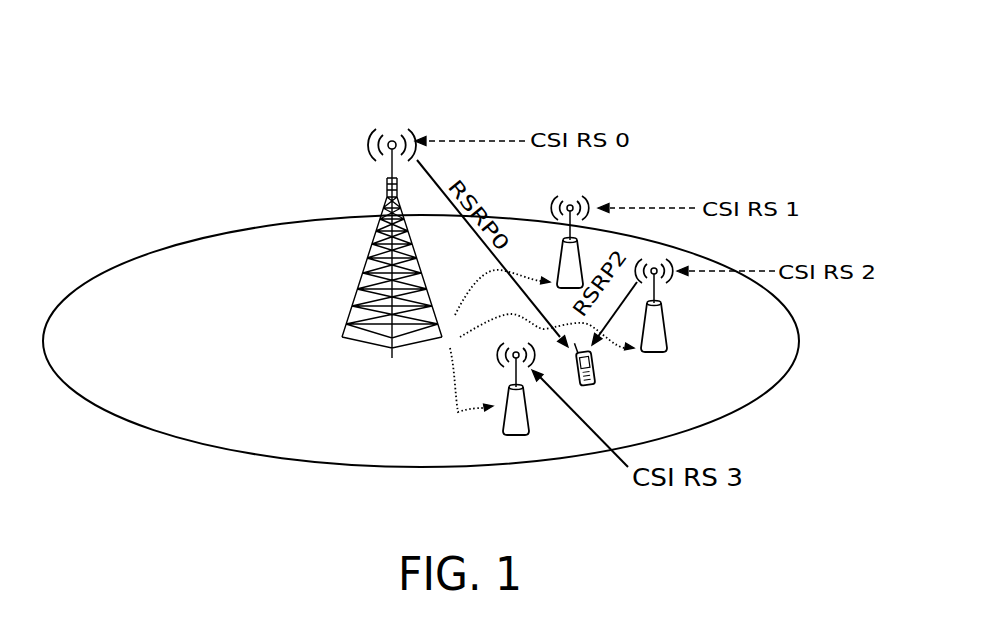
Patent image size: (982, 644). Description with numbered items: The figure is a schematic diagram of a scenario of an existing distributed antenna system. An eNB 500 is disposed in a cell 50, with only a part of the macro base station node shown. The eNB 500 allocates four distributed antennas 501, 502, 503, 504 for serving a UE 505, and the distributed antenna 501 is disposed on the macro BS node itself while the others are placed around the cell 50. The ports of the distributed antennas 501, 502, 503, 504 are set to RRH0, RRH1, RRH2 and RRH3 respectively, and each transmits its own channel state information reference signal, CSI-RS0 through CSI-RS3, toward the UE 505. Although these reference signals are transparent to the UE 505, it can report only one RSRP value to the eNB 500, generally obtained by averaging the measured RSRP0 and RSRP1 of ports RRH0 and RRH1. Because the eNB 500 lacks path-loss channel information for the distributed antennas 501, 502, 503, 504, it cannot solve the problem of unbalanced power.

The cell 50 is at (208, 252).
The eNB 500 is at (362, 246).
The distributed antenna 501 is at (418, 133).
The distributed antenna 502 is at (578, 190).
The distributed antenna 503 is at (675, 292).
The distributed antenna 504 is at (537, 404).
The UE 505 is at (604, 381).